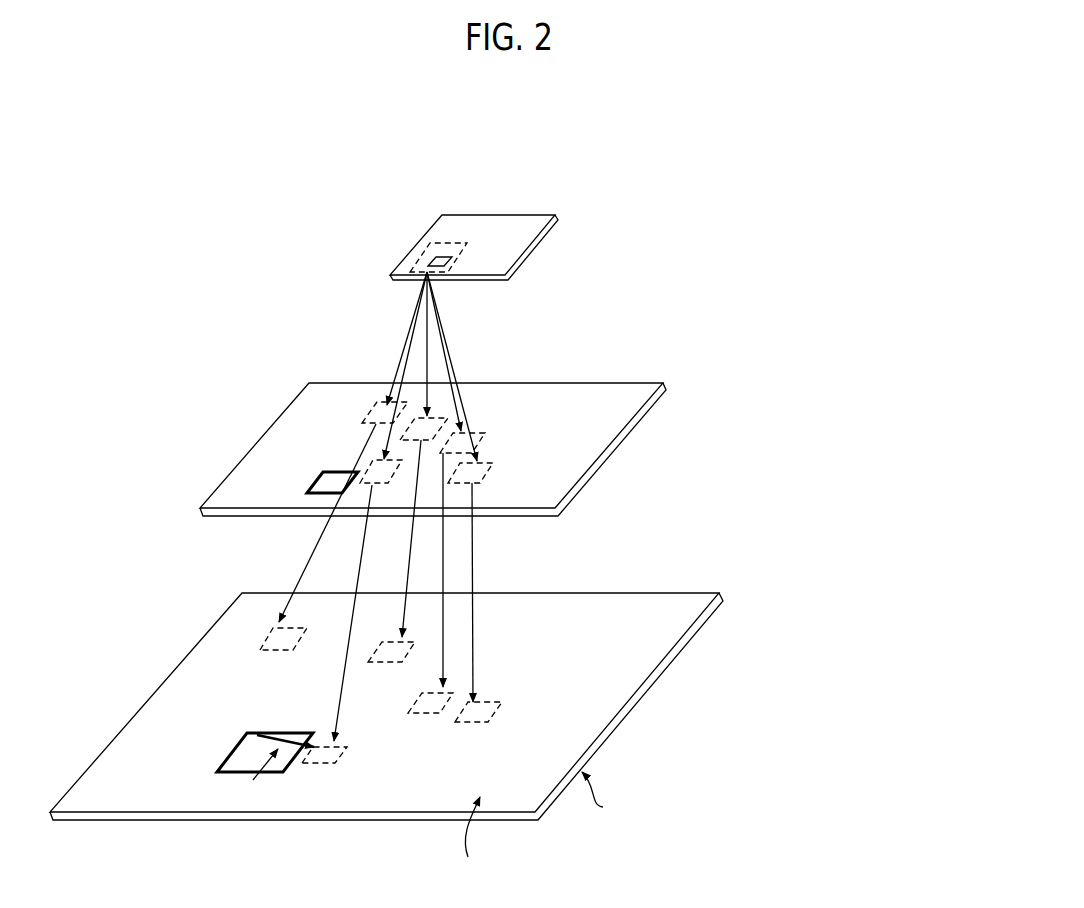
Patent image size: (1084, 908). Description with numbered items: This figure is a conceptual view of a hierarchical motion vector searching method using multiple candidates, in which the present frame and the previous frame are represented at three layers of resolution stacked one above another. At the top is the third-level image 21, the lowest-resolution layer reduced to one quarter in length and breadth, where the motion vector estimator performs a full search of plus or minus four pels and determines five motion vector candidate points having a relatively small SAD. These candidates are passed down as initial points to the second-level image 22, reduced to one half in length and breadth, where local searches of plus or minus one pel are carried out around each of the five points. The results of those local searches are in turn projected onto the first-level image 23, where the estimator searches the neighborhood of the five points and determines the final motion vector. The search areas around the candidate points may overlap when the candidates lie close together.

The layer-2 21 is at (413, 251).
The layer-1 22 is at (250, 454).
The layer-0 23 is at (181, 666).